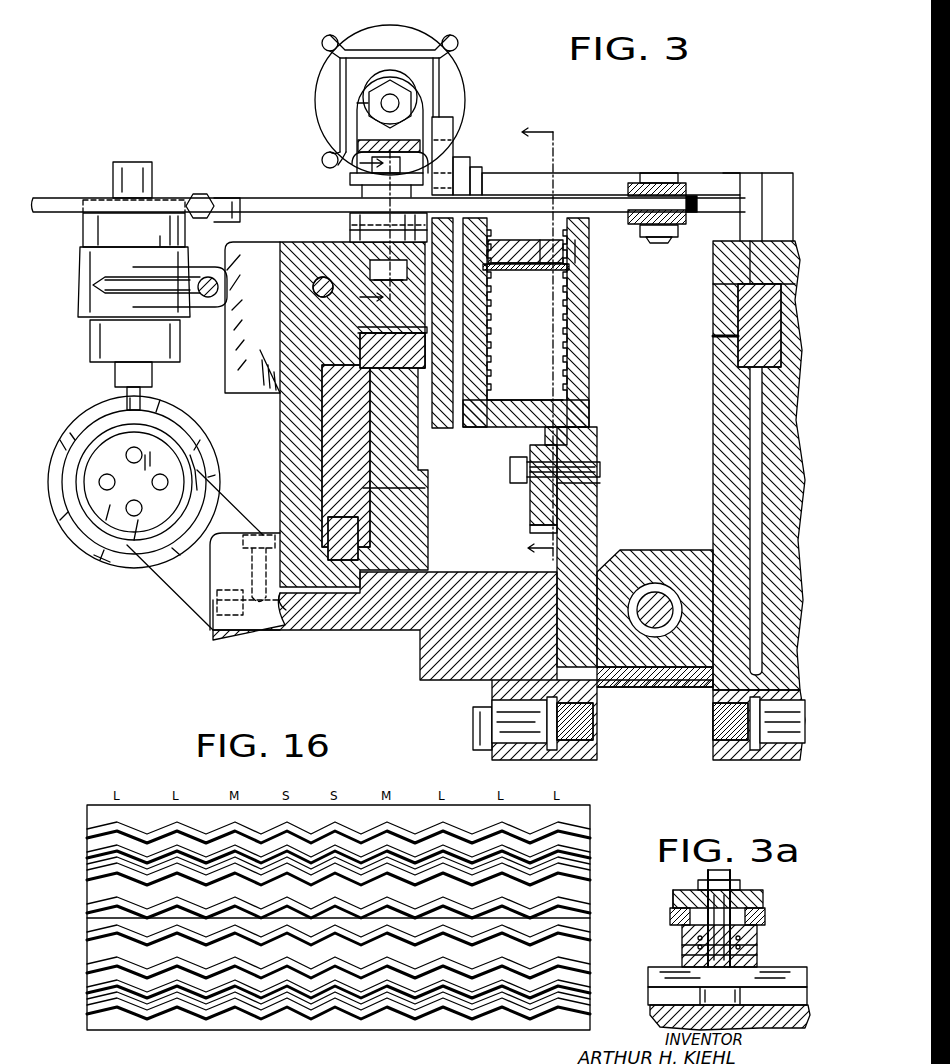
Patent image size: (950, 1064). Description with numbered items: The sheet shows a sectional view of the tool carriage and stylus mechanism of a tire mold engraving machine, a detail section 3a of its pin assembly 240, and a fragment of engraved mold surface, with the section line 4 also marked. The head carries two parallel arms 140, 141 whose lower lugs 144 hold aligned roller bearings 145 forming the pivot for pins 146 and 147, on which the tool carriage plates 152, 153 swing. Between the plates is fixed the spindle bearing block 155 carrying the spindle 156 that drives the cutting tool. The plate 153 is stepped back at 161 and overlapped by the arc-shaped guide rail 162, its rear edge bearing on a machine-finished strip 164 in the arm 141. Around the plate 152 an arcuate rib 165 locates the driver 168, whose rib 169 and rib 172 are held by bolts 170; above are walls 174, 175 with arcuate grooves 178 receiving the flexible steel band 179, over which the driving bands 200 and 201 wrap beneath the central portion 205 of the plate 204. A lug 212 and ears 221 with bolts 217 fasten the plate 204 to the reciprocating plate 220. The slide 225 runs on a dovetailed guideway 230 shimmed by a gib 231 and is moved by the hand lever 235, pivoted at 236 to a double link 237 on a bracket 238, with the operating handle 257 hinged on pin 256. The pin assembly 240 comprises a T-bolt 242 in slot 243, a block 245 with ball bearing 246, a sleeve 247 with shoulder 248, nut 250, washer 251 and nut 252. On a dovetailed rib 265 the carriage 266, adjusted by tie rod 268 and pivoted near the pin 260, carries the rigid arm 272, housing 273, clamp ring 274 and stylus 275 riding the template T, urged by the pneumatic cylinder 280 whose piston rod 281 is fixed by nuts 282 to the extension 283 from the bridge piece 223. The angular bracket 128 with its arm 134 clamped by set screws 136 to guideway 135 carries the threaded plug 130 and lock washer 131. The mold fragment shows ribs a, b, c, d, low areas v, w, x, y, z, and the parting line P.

In FIG. 3, the pneumatic cylinder 280 is at (400, 28).
In FIG. 3, the piston rod 281 is at (395, 103).
In FIG. 3, the nuts 282 is at (370, 95).
In FIG. 3, the extension 283 is at (358, 103).
In FIG. 3, the bridge piece 223 is at (360, 146).
In FIG. 3, the nut 252 is at (372, 160).
In FIG. 3a, the nut 252 is at (735, 882).
In FIG. 3, the nut 250 is at (352, 180).
In FIG. 3a, the nut 250 is at (750, 896).
In FIG. 3a, the washer 251 is at (672, 903).
In FIG. 3, the upstanding ears 221 is at (445, 165).
In FIG. 3, the upstanding lug 212 is at (460, 170).
In FIG. 3, the bolts 217 is at (478, 180).
In FIG. 3, the hand lever 235 is at (588, 195).
In FIG. 3a, the hand lever 235 is at (670, 917).
In FIG. 3, the pivot 236 is at (658, 173).
In FIG. 3, the double link 237 is at (682, 178).
In FIG. 3, the bracket 238 is at (723, 195).
In FIG. 3, the stylus 275 is at (150, 168).
In FIG. 3, the pin 256 is at (203, 200).
In FIG. 3, the swinging operating handle 257 is at (50, 205).
In FIG. 3, the housing 273 is at (96, 227).
In FIG. 3, the rigid arm 272 is at (78, 300).
In FIG. 3, the clamp ring 274 is at (92, 342).
In FIG. 3, the tie rod 268 is at (208, 297).
In FIG. 3, the pivot pin 260 is at (318, 293).
In FIG. 3, the carriage 266 is at (226, 358).
In FIG. 3, the dovetailed rib 265 is at (268, 358).
In FIG. 3, the pin assembly 240 is at (340, 225).
In FIG. 3a, the pin assembly 240 is at (765, 957).
In FIG. 3, the T-bolt 242 is at (370, 268).
In FIG. 3a, the T-bolt 242 is at (720, 976).
In FIG. 3, the longitudinal slot 243 is at (372, 272).
In FIG. 3a, the longitudinal slot 243 is at (648, 995).
In FIG. 3, the block 245 is at (350, 232).
In FIG. 3a, the block 245 is at (682, 960).
In FIG. 3, the plate 204 is at (515, 234).
In FIG. 3, the band 201 is at (522, 262).
In FIG. 3, the central portion 205 is at (580, 248).
In FIG. 3, the band 200 is at (503, 272).
In FIG. 3, the flexible steel band 179 is at (530, 272).
In FIG. 3, the arcuate grooves 178 is at (565, 312).
In FIG. 3, the right-hand wall 175 is at (588, 360).
In FIG. 3, the left-hand wall 174 is at (485, 395).
In FIG. 3, the arc-shaped guide rail 162 is at (706, 268).
In FIG. 3, the stepped back portion 161 is at (738, 314).
In FIG. 3, the machine-finished strip 164 is at (768, 342).
In FIG. 3, the plate 153 is at (713, 380).
In FIG. 3, the arm 141 is at (780, 455).
In FIG. 3, the threaded plug 130 is at (100, 458).
In FIG. 3, the lock washer 131 is at (80, 473).
In FIG. 3, the template T is at (94, 565).
In FIG. 3, the angular bracket 128 is at (170, 575).
In FIG. 3, the set screws 136 is at (215, 600).
In FIG. 3, the forwardly extending arm 134 is at (225, 632).
In FIG. 3, the guideway 135 is at (282, 632).
In FIG. 3, the slide 225 is at (295, 435).
In FIG. 3a, the slide 225 is at (655, 1020).
In FIG. 3, the dovetailed guideway 230 is at (387, 437).
In FIG. 3, the gib 231 is at (345, 540).
In FIG. 3, the reciprocating plate 220 is at (440, 428).
In FIG. 3, the driver 168 is at (586, 428).
In FIG. 3, the rib 172 is at (540, 448).
In FIG. 3, the bolts 170 is at (560, 468).
In FIG. 3, the arcuate rib 165 is at (580, 500).
In FIG. 3, the rib 169 is at (535, 523).
In FIG. 3, the plate 152 is at (580, 540).
In FIG. 3, the spindle 156 is at (650, 600).
In FIG. 3, the spindle bearing block 155 is at (655, 675).
In FIG. 3, the arm 140 is at (425, 665).
In FIG. 3, the pin 146 is at (478, 740).
In FIG. 3, the lugs 144 is at (525, 762).
In FIG. 3, the roller bearings 145 is at (535, 762).
In FIG. 3, the pin 147 is at (785, 755).
In FIG. 3, the section line 4 is at (528, 341).
In FIG. 3, the section line 3a is at (383, 230).
In FIG. 3a, the shoulder 248 is at (765, 914).
In FIG. 3a, the sleeve 247 is at (682, 932).
In FIG. 3a, the ball bearing 246 is at (698, 945).
In FIG. 16, the rib d is at (90, 833).
In FIG. 16, the rib c is at (90, 858).
In FIG. 16, the rib b is at (90, 878).
In FIG. 16, the rib a is at (90, 908).
In FIG. 16, the low area v is at (90, 925).
In FIG. 16, the parting line P is at (582, 918).
In FIG. 16, the low area z is at (90, 812).
In FIG. 16, the low area y is at (92, 846).
In FIG. 16, the low area x is at (92, 870).
In FIG. 16, the low area w is at (92, 890).